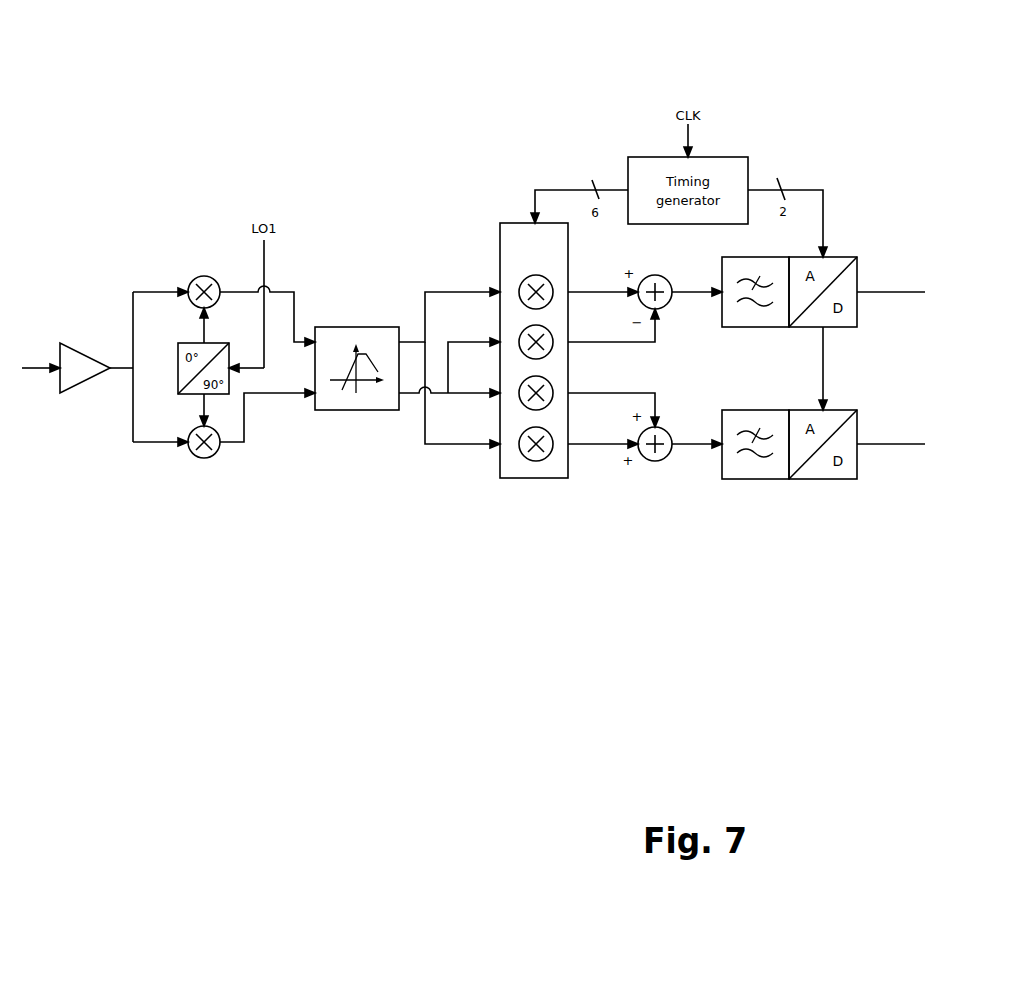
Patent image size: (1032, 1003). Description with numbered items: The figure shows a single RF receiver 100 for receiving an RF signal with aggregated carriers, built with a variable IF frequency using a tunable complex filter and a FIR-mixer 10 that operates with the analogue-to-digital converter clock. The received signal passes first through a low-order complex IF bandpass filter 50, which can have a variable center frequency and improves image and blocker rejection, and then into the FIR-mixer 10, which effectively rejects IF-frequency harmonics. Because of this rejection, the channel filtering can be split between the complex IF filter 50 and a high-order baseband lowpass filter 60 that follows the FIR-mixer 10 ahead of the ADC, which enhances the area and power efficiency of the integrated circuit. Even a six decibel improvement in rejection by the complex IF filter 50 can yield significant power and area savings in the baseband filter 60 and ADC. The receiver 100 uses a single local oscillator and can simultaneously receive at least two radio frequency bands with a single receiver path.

The receiver 100 is at (272, 129).
The FIR-mixer 10 is at (500, 252).
The complex IF bandpass filter 50 is at (347, 410).
The baseband lowpass filter 60 is at (762, 272).